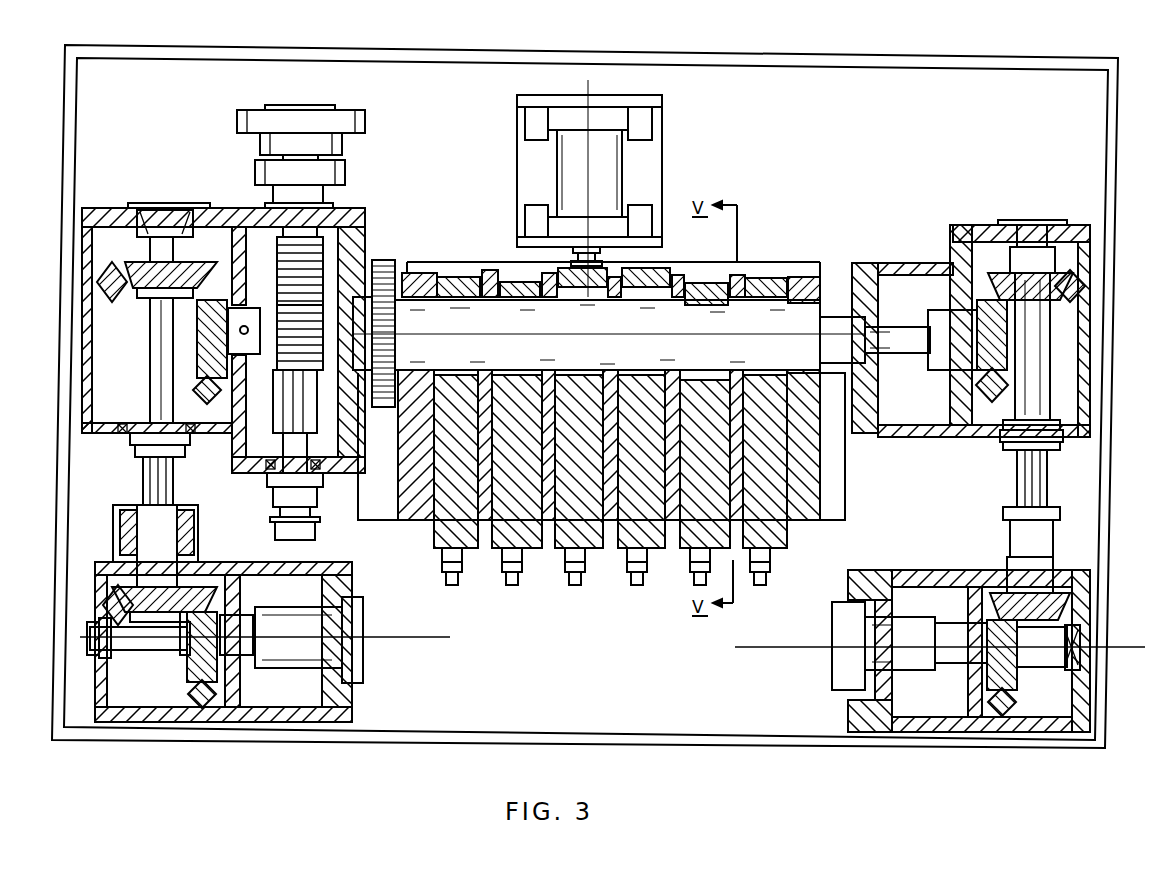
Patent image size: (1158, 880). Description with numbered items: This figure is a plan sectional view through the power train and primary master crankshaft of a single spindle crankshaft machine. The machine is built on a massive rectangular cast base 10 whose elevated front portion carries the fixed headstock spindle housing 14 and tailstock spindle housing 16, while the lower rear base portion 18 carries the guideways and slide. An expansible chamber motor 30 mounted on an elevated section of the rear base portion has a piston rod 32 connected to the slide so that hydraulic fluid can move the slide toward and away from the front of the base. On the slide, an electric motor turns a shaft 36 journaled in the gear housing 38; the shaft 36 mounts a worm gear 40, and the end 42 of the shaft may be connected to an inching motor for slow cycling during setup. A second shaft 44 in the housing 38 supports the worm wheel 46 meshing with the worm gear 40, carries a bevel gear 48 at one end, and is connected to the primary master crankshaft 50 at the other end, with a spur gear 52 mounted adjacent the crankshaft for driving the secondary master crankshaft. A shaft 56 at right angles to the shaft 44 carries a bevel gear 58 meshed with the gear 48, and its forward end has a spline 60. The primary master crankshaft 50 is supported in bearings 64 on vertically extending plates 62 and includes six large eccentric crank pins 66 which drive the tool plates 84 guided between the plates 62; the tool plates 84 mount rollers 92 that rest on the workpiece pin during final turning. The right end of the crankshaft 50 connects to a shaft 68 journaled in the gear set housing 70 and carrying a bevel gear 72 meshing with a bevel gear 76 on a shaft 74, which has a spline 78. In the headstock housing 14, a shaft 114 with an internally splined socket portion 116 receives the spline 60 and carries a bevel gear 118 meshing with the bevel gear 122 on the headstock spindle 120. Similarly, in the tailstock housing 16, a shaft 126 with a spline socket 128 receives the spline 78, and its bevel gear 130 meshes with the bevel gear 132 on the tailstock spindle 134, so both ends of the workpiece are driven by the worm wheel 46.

The base 10 is at (948, 56).
The headstock spindle housing 14 is at (298, 722).
The tailstock spindle housing 16 is at (962, 722).
The rear base portion 18 is at (940, 137).
The expansible chamber motor 30 is at (610, 176).
The piston rod 32 is at (600, 255).
The shaft 36 is at (344, 217).
The gear housing 38 is at (226, 208).
The worm gear 40 is at (278, 345).
The end of the shaft 42 is at (312, 535).
The shaft 44 is at (250, 304).
The worm wheel 46 is at (316, 418).
The bevel gear 48 is at (208, 388).
The primary master crankshaft 50 is at (757, 312).
The spur gear 52 is at (386, 264).
The shaft 56 is at (155, 347).
The bevel gear 58 is at (130, 265).
The spline 60 is at (142, 474).
The vertically extending plates 62 is at (418, 298).
The bearings 64 is at (693, 311).
The crank pins 66 is at (458, 313).
The shaft 68 is at (898, 352).
The gear set housing 70 is at (913, 264).
The bevel gear 72 is at (975, 383).
The shaft 74 is at (1032, 373).
The bevel gear 76 is at (1033, 290).
The spline 78 is at (1046, 476).
The tool plates 84 is at (660, 552).
The roller 92 is at (574, 585).
The shaft 114 is at (175, 572).
The internally splined socket portion 116 is at (150, 525).
The bevel gear 118 is at (108, 590).
The headstock spindle 120 is at (330, 658).
The bevel gear 122 is at (215, 712).
The shaft 126 is at (1035, 602).
The spline socket 128 is at (1002, 525).
The bevel gear 130 is at (1006, 565).
The bevel gear 132 is at (1010, 680).
The tailstock spindle 134 is at (905, 666).